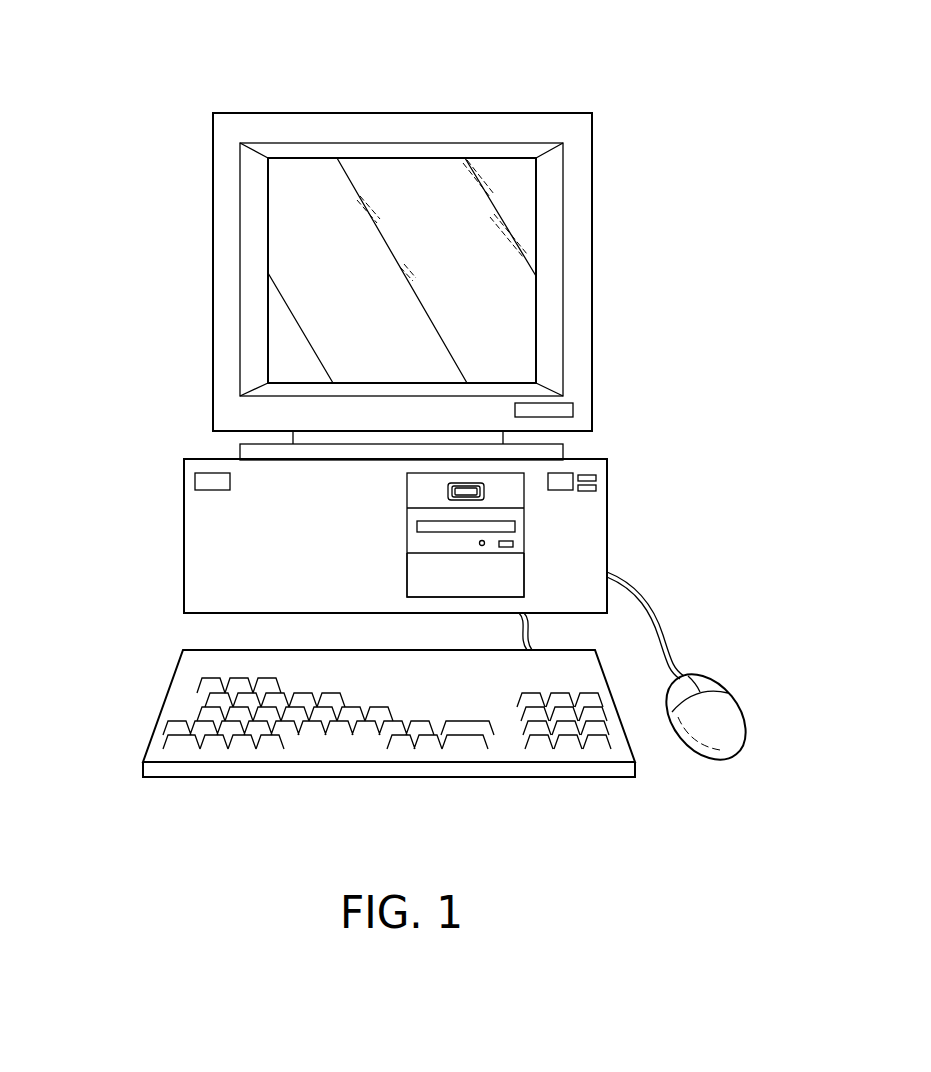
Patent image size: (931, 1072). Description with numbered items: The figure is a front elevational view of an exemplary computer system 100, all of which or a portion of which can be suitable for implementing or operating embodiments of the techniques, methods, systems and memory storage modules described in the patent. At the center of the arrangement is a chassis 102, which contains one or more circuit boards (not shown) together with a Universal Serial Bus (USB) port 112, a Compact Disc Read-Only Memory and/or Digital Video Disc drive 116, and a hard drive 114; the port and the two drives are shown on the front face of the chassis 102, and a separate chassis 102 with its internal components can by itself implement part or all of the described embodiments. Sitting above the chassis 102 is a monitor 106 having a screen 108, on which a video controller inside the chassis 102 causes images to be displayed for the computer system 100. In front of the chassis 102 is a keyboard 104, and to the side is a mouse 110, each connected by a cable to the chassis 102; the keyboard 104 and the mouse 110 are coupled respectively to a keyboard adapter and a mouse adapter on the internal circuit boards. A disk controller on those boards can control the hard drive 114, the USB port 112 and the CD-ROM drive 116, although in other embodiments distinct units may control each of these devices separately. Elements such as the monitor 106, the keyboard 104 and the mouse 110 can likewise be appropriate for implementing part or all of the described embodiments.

The computer system 100 is at (594, 80).
The chassis 102 is at (183, 537).
The keyboard 104 is at (165, 703).
The monitor 106 is at (288, 113).
The screen 108 is at (317, 274).
The mouse 110 is at (725, 707).
The Universal Serial Bus (USB) port 112 is at (486, 487).
The hard drive 114 is at (515, 574).
The CD-ROM and/or DVD drive 116 is at (515, 532).